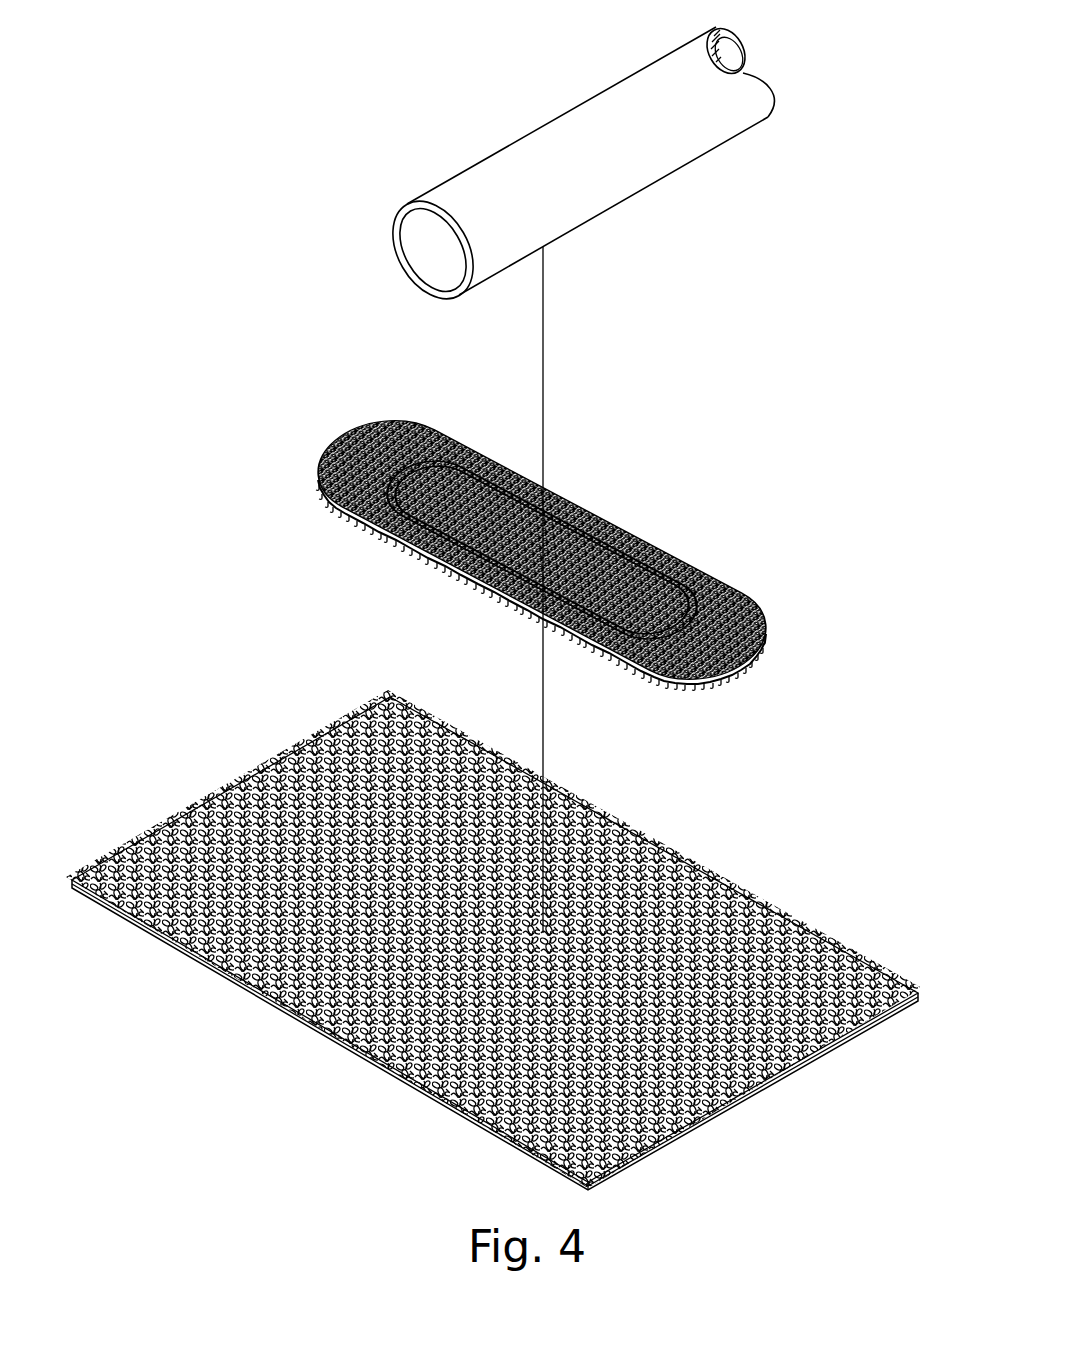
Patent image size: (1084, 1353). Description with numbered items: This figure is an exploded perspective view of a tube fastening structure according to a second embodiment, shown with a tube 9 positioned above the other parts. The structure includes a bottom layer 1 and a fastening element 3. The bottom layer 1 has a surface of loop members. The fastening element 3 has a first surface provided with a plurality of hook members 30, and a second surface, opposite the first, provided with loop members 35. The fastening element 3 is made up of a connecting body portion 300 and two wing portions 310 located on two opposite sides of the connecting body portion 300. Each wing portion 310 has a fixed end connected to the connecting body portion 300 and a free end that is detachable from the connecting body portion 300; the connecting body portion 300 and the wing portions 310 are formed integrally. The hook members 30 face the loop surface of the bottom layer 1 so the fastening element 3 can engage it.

The bottom layer 1 is at (254, 778).
The fastening element 3 is at (556, 562).
The tube 9 is at (468, 186).
The hook members 30 is at (440, 580).
The loop members 35 is at (703, 575).
The connecting body portion 300 is at (605, 592).
The wing portions 310 is at (350, 452).